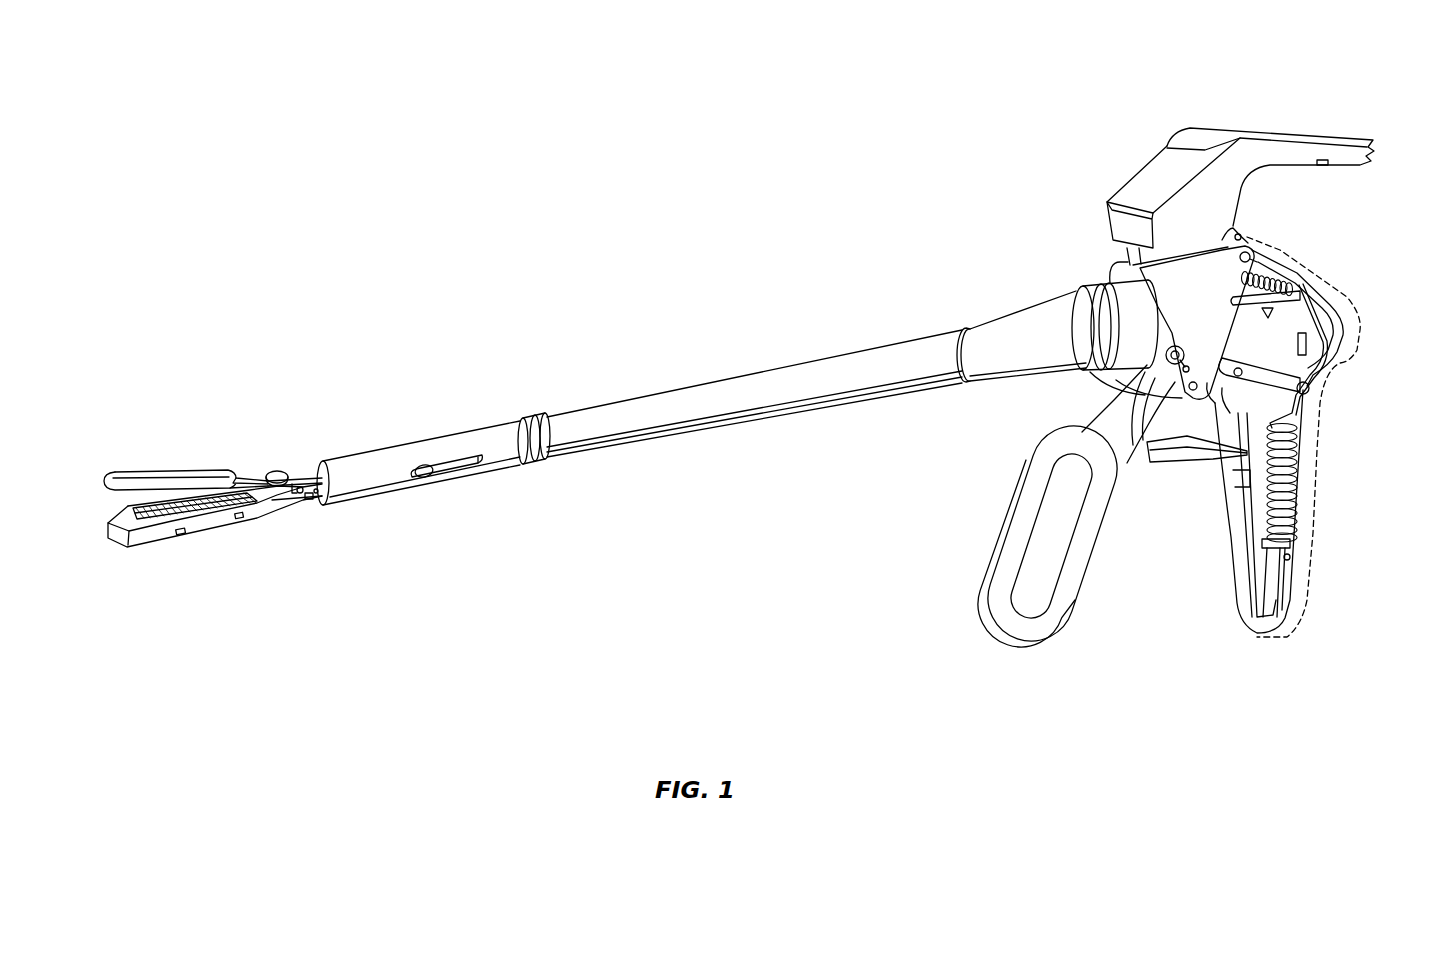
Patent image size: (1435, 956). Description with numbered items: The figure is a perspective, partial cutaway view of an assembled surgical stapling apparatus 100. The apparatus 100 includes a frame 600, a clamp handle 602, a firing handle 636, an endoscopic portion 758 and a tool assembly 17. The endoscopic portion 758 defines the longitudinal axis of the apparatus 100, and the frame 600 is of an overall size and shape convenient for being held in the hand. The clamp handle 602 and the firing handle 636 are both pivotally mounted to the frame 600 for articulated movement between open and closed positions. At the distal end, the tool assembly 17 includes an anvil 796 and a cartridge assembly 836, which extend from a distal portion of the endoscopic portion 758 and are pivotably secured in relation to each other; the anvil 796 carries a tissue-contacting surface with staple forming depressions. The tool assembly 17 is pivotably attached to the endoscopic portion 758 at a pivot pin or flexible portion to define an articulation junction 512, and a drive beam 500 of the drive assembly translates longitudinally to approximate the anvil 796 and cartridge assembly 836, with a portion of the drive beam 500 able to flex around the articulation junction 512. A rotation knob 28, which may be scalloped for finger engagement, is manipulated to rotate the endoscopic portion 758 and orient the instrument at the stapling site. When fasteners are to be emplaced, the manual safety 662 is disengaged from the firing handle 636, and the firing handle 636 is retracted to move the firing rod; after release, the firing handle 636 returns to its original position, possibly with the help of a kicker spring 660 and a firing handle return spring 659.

The surgical stapling apparatus 100 is at (508, 324).
The tool assembly 17 is at (173, 443).
The anvil 796 is at (128, 478).
The cartridge assembly 836 is at (197, 529).
The drive beam 500 is at (276, 472).
The articulation junction 512 is at (320, 503).
The endoscopic portion 758 is at (706, 378).
The rotation knob 28 is at (985, 318).
The frame 600 is at (1350, 300).
The clamp handle 602 is at (1243, 125).
The firing handle 636 is at (1083, 640).
The kicker spring 660 is at (1262, 527).
The firing handle return spring 659 is at (1300, 492).
The manual safety 662 is at (1187, 461).